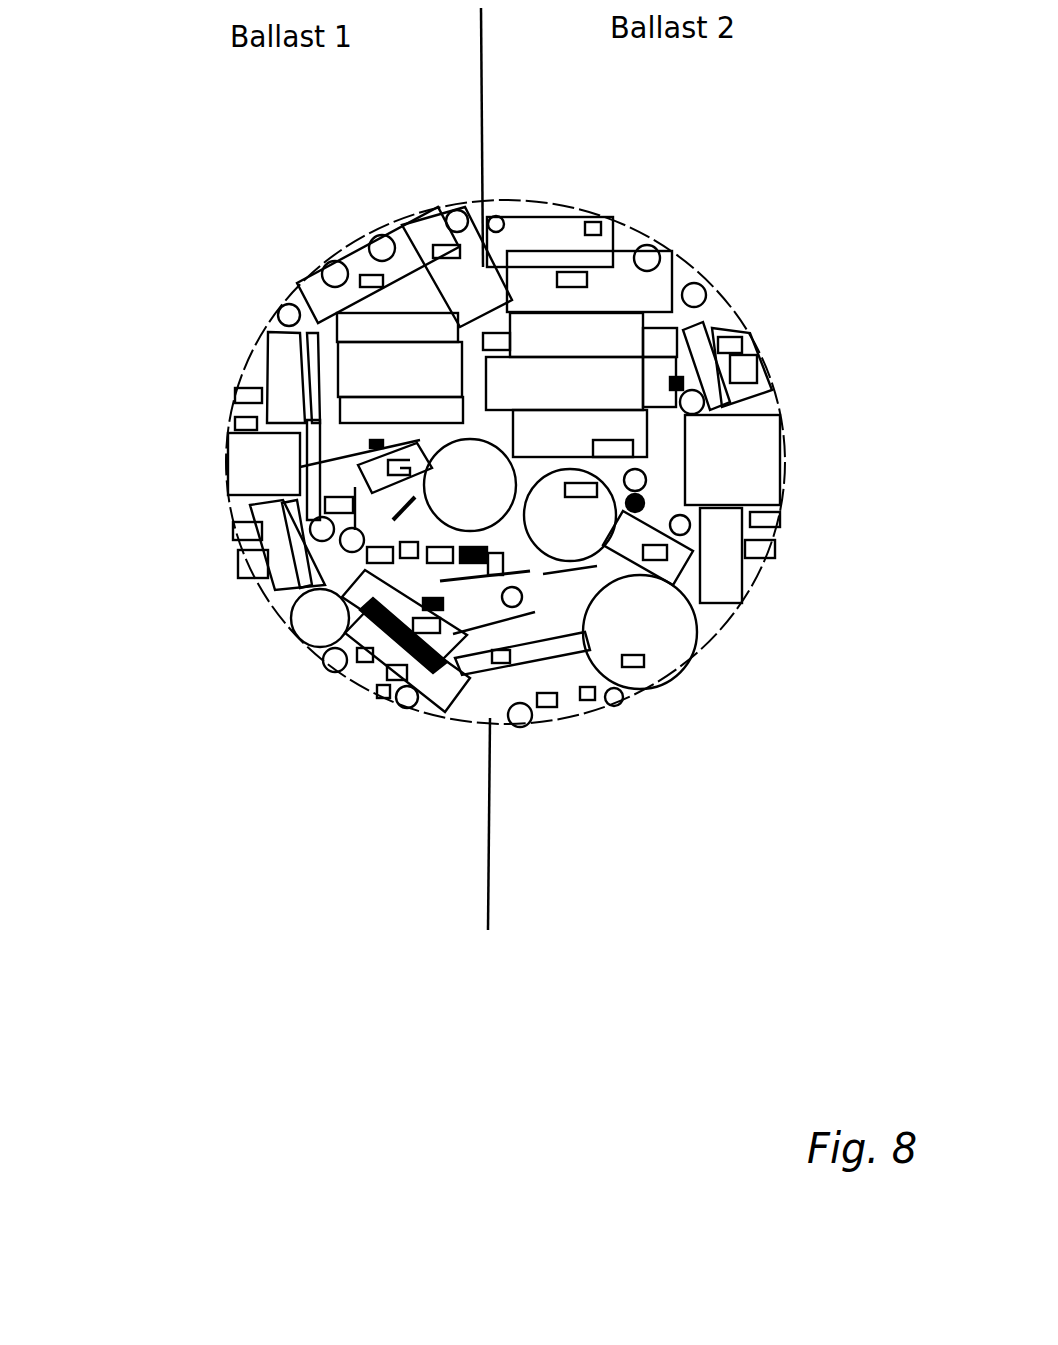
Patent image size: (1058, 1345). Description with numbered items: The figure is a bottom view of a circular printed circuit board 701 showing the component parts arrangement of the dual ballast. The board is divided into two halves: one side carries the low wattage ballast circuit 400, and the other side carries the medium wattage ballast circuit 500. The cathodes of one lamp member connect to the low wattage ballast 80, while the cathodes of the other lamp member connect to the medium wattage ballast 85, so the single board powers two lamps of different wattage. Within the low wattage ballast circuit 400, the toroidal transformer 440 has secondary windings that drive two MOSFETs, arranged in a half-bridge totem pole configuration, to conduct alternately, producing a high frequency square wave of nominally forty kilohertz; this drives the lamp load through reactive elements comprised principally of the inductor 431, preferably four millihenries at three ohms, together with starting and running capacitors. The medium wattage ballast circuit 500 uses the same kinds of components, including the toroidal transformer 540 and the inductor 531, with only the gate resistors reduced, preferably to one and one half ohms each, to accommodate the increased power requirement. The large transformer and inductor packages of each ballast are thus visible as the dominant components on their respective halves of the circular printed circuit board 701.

The low wattage ballast circuit 400 is at (338, 148).
The medium wattage ballast circuit 500 is at (608, 147).
The inductor 431 is at (403, 367).
The toroidal transformer 440 is at (263, 467).
The inductor 531 is at (620, 382).
The toroidal transformer 540 is at (737, 453).
The circular printed circuit board 701 is at (730, 623).
The low wattage ballast 80 is at (260, 723).
The medium wattage ballast 85 is at (680, 728).